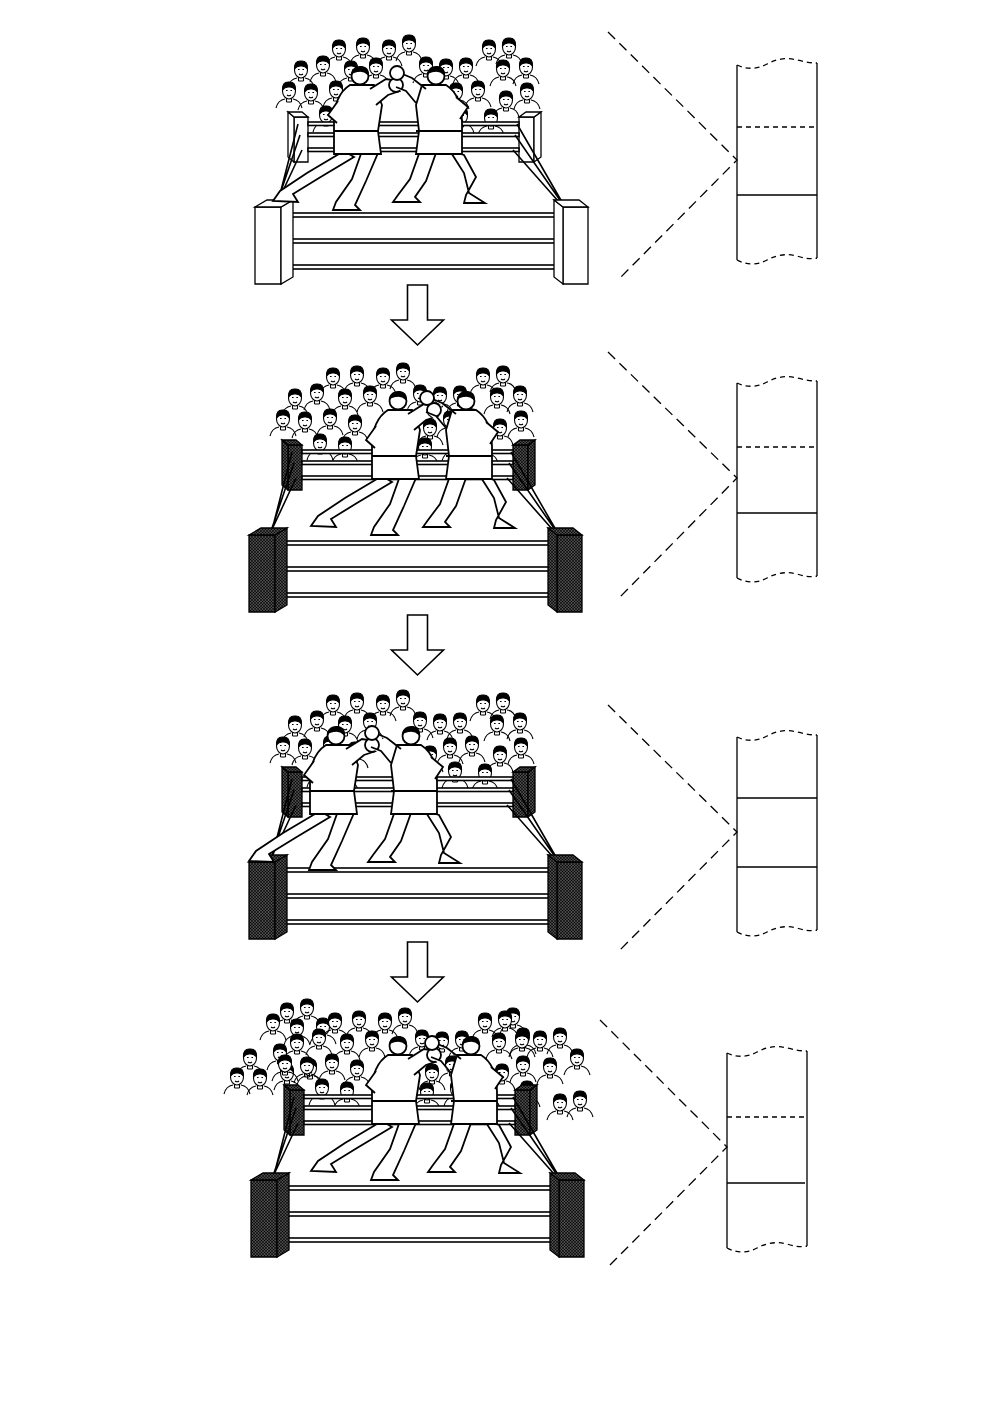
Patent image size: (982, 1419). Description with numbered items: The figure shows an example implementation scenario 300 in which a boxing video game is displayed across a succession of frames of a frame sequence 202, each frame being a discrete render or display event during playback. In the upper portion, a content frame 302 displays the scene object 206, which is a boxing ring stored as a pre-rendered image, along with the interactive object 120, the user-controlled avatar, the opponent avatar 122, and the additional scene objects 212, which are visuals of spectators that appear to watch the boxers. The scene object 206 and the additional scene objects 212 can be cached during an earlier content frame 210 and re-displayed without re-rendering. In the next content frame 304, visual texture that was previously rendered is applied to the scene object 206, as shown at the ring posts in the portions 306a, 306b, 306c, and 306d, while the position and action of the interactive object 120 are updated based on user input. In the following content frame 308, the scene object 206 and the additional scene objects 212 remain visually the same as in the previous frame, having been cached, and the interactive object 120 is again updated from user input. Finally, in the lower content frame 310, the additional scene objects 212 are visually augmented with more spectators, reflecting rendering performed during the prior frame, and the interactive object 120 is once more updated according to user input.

The scenario 300 is at (173, 45).
The additional scene objects 212 is at (268, 78).
The content frame 210 is at (240, 1013).
The scene object 206 is at (422, 684).
The portion 306a is at (282, 432).
The portion 306b is at (265, 528).
The portion 306c is at (532, 437).
The portion 306d is at (572, 527).
The opponent avatar 122 is at (352, 72).
The interactive object 120 is at (433, 72).
The frame sequence 202 is at (779, 57).
The content frame 302 is at (758, 175).
The content frame 304 is at (758, 495).
The content frame 308 is at (758, 848).
The content frame 310 is at (747, 1163).